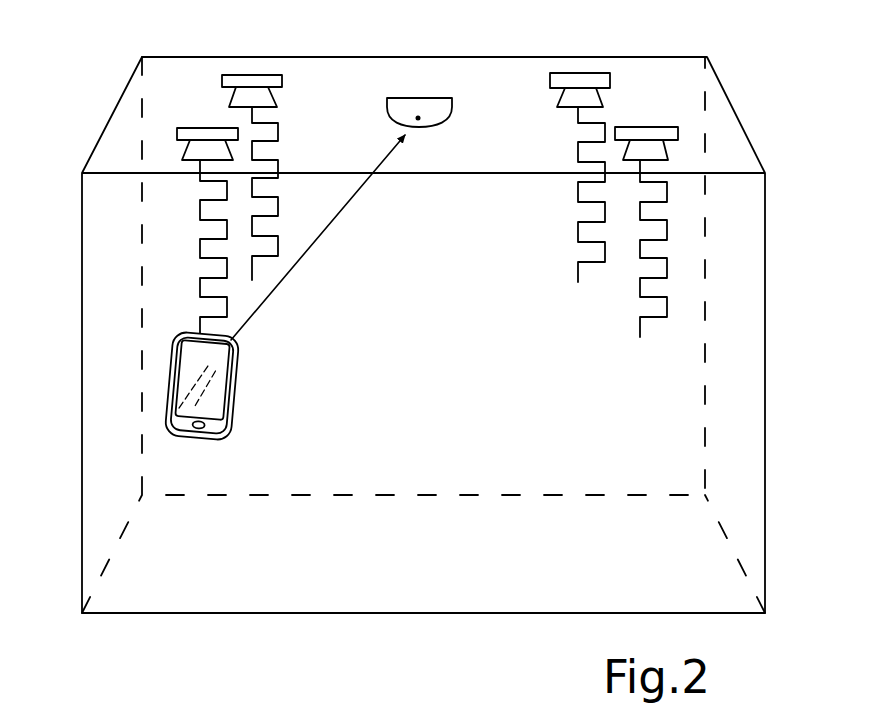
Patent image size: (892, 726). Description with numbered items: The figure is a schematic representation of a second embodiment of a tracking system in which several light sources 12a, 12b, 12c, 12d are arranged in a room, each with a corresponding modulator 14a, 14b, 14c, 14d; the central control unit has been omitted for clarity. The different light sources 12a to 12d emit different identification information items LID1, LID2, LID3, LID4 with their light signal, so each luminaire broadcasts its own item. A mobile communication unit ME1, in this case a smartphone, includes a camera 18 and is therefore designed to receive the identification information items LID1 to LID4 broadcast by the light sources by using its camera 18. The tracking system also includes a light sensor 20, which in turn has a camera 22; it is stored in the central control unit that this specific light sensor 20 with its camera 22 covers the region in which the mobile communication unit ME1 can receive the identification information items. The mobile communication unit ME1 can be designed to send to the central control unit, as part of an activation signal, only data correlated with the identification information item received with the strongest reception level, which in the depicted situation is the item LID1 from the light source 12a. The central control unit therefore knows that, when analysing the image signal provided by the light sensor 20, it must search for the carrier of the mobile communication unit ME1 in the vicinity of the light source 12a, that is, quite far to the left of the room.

The light source 12a is at (229, 157).
The light source 12b is at (263, 103).
The light source 12c is at (577, 100).
The light source 12d is at (664, 152).
The modulator 14a is at (233, 135).
The modulator 14b is at (273, 82).
The modulator 14c is at (561, 83).
The modulator 14d is at (673, 134).
The camera 18 is at (200, 332).
The light sensor 20 is at (427, 98).
The camera 22 is at (418, 119).
The identification information item LID1 is at (200, 240).
The identification information item LID2 is at (250, 113).
The identification information item LID3 is at (606, 122).
The identification information item LID4 is at (667, 265).
The mobile communication unit ME1 is at (211, 370).